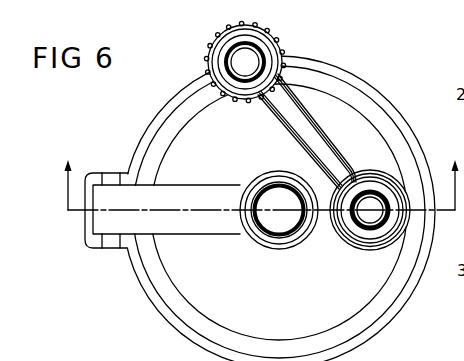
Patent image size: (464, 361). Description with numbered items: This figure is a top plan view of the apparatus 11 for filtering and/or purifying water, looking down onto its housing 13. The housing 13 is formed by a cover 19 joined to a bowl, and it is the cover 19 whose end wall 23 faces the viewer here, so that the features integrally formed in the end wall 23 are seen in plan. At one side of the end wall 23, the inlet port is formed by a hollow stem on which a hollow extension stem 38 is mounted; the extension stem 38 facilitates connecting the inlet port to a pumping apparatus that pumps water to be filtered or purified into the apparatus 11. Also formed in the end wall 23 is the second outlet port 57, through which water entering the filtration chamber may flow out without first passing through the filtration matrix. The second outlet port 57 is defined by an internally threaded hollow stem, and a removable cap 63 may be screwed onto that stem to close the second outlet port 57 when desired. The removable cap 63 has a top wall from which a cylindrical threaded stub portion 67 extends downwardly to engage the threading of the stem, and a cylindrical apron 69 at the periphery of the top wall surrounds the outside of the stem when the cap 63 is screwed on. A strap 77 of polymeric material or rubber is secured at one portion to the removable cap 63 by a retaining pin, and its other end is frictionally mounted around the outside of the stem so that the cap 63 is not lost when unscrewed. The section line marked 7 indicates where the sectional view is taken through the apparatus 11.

The apparatus 11 is at (374, 64).
The housing 13 is at (192, 272).
The cover 19 is at (353, 282).
The end wall 23 is at (217, 288).
The hollow extension stem 38 is at (279, 222).
The second outlet port 57 is at (367, 200).
The removable cap 63 is at (268, 30).
The cylindrical threaded stub portion 67 is at (230, 56).
The cylindrical apron 69 is at (225, 97).
The strap 77 is at (304, 139).
The section line 7- 7 is at (261, 173).